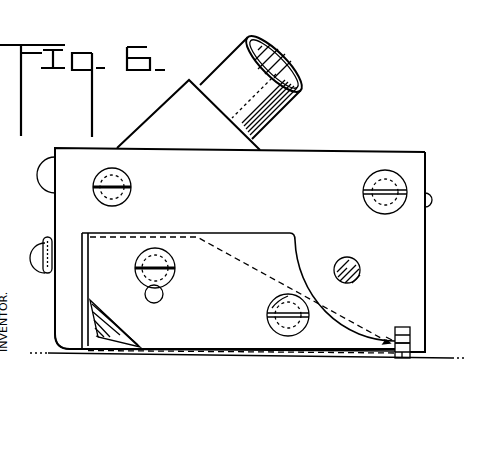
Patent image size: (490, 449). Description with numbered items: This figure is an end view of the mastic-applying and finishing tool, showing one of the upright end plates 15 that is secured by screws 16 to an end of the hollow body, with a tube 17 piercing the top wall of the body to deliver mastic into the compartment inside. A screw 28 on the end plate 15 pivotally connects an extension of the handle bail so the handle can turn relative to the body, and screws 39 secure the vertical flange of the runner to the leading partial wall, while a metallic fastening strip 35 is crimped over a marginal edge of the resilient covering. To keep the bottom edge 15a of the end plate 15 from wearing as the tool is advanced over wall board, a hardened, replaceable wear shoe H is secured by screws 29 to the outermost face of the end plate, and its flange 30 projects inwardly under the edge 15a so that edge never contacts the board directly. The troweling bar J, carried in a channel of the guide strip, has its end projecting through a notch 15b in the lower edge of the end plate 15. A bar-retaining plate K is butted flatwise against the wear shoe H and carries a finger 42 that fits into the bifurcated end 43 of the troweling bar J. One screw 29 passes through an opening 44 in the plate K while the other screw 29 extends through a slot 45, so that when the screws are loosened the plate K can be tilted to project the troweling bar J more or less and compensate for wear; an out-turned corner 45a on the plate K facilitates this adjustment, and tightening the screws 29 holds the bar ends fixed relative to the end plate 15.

The end plate 15 is at (349, 153).
The bottom edge of end plate 15a is at (72, 352).
The notch 15b is at (405, 328).
The screw 16 is at (130, 189).
The tube 17 is at (304, 78).
The screw 28 is at (360, 267).
The screw 29 is at (176, 270).
The flange 30 is at (297, 357).
The metallic fastening strip 35 is at (46, 237).
The screw 39 is at (42, 171).
The finger 42 is at (386, 337).
The bifurcated end 43 is at (410, 343).
The opening 44 is at (272, 308).
The slot 45 is at (164, 299).
The out-turned corner 45a is at (119, 331).
The wear shoe H is at (214, 357).
The troweling bar J is at (400, 360).
The bar-retaining plate K is at (266, 246).